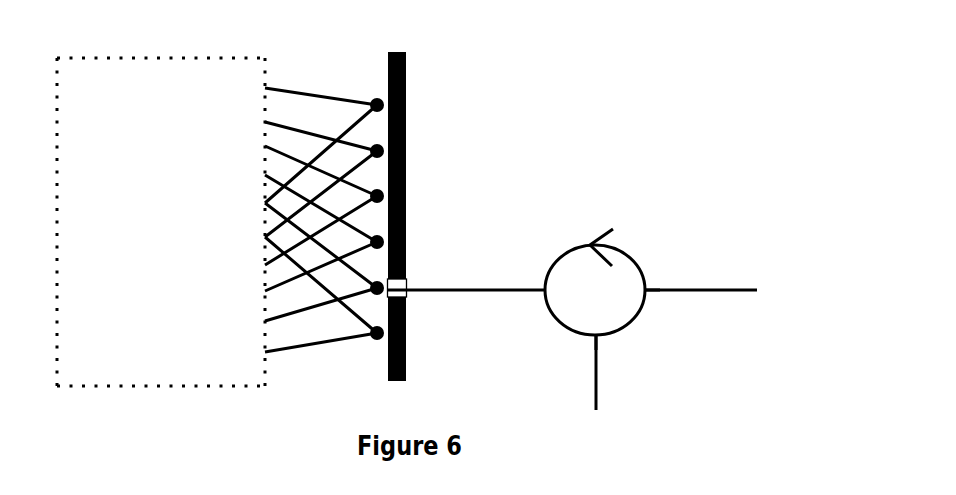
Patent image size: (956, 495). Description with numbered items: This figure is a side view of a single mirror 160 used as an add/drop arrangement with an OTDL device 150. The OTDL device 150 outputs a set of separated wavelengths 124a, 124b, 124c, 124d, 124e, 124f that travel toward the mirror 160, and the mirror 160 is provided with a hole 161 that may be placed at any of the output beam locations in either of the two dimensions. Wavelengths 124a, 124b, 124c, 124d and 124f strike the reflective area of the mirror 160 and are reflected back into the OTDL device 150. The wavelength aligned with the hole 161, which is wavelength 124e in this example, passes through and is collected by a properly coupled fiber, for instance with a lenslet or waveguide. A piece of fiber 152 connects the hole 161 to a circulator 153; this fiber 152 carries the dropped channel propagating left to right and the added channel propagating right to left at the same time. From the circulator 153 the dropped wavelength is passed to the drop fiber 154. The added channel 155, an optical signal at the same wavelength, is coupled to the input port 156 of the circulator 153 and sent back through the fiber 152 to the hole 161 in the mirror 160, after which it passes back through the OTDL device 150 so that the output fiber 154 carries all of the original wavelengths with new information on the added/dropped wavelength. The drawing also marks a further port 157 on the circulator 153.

The OTDL device 150 is at (161, 240).
The separated wavelength 124a is at (326, 140).
The separated wavelength 124b is at (326, 179).
The separated wavelength 124c is at (326, 205).
The separated wavelength 124d is at (326, 233).
The separated wavelength 124e is at (326, 262).
The separated wavelength 124f is at (325, 294).
The mirror 160 is at (433, 87).
The hole 161 is at (407, 297).
The piece of fiber 152 is at (519, 288).
The circulator 153 is at (557, 263).
The drop fiber 154 is at (601, 363).
The added channel 155 is at (711, 289).
The input port 156 is at (648, 283).
The circulator port 157 is at (589, 336).